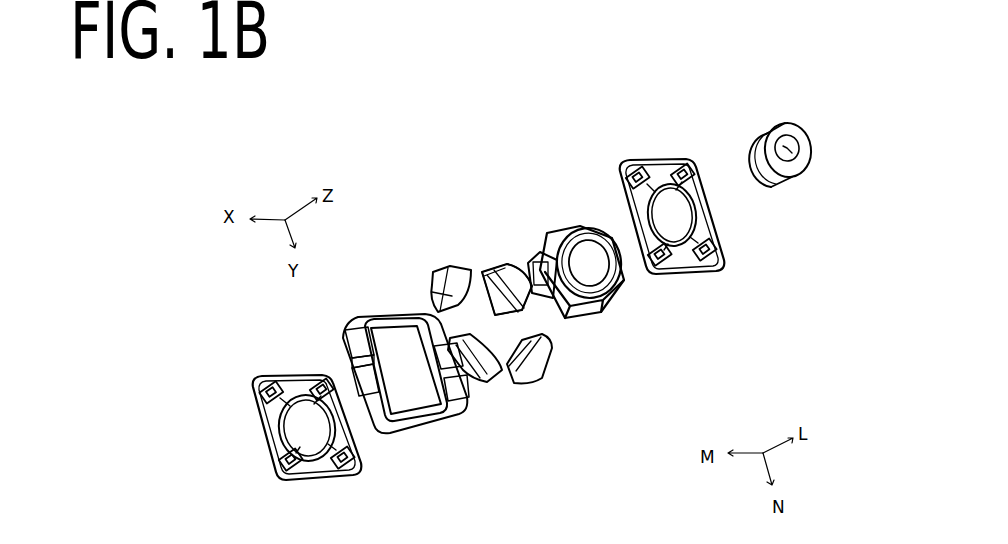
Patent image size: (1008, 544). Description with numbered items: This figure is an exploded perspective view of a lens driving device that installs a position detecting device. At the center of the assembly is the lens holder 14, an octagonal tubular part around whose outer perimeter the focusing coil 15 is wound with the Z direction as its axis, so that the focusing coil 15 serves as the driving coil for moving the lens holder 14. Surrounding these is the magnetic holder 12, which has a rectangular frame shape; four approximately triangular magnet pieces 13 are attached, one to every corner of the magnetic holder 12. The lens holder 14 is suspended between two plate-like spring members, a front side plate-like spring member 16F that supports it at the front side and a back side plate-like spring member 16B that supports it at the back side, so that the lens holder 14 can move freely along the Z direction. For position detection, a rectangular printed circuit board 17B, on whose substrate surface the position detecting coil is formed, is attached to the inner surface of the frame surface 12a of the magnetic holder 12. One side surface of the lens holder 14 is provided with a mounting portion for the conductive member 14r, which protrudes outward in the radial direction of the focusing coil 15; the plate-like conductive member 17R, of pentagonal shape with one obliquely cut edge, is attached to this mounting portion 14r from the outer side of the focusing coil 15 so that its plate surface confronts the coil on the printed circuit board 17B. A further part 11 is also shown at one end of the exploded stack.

The lens cap 11 is at (790, 138).
The magnetic holder 12 is at (393, 312).
The frame surface 12a is at (350, 370).
The magnet piece 13 is at (552, 350).
The lens holder 14 is at (620, 283).
The mounting portion for the conductive member 14r is at (568, 237).
The focusing coil 15 is at (597, 320).
The back side plate-like spring member 16B is at (288, 372).
The front side plate-like spring member 16F is at (725, 240).
The printed circuit board 17B is at (527, 258).
The conductive member 17R is at (537, 248).